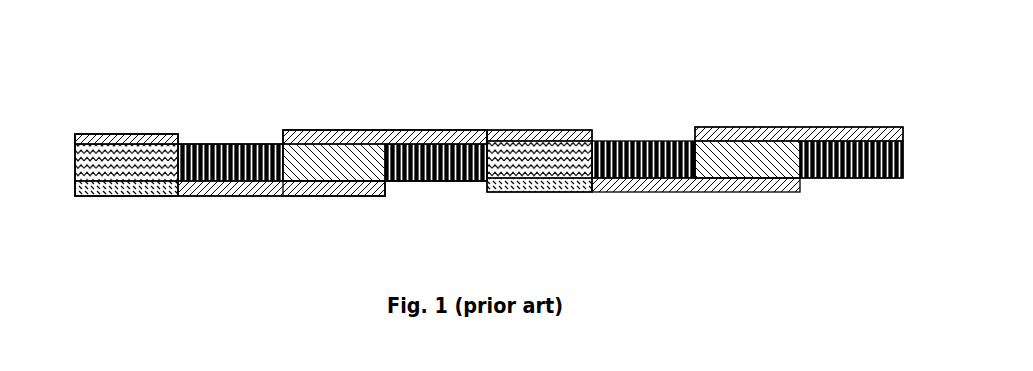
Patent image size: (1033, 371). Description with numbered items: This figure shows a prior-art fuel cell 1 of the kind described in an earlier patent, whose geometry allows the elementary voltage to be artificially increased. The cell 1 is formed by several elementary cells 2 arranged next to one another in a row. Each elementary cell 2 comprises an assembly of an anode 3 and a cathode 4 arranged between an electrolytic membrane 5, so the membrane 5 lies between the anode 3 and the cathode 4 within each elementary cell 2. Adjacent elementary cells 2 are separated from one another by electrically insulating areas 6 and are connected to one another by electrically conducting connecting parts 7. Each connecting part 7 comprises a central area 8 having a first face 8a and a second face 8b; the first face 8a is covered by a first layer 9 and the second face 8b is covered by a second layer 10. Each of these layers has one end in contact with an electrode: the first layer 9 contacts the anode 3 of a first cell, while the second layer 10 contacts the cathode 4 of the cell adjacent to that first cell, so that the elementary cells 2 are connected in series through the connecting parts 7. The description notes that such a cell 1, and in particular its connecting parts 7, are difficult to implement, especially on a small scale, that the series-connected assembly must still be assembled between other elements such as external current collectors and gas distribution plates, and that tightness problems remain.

The cell 1 is at (183, 80).
The elementary cell 2 is at (62, 161).
The anode 3 is at (125, 134).
The cathode 4 is at (95, 190).
The electrolytic membrane 5 is at (125, 165).
The electrically insulating area 6 is at (248, 165).
The electrically conducting connecting part 7 is at (375, 108).
The central area 8 is at (342, 168).
The first face 8a is at (318, 186).
The second face 8b is at (300, 140).
The first layer 9 is at (203, 185).
The second layer 10 is at (413, 140).